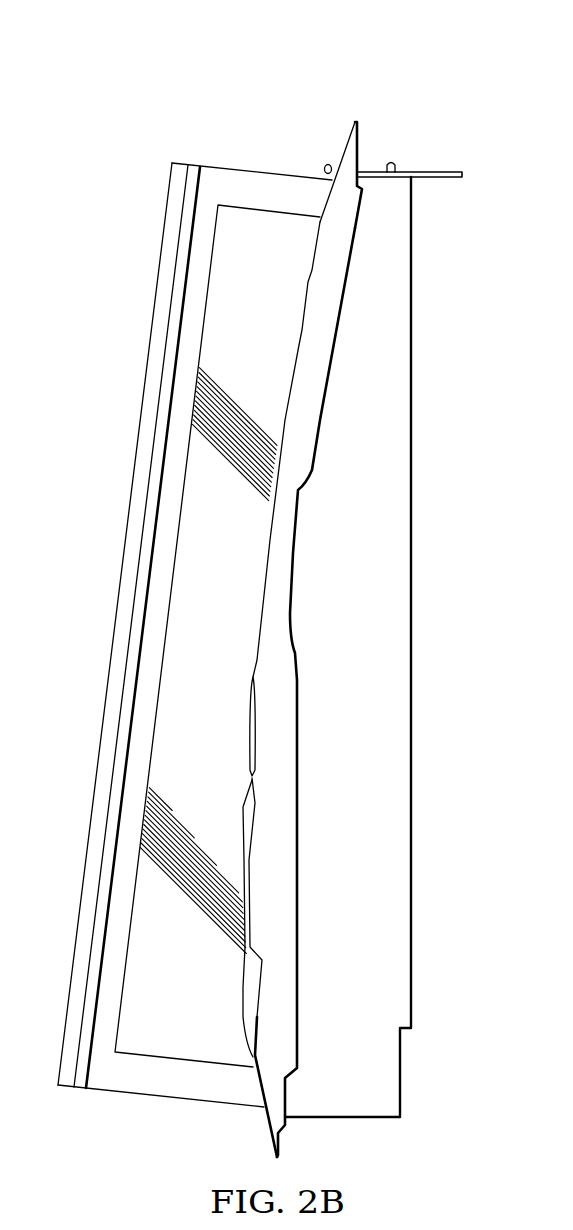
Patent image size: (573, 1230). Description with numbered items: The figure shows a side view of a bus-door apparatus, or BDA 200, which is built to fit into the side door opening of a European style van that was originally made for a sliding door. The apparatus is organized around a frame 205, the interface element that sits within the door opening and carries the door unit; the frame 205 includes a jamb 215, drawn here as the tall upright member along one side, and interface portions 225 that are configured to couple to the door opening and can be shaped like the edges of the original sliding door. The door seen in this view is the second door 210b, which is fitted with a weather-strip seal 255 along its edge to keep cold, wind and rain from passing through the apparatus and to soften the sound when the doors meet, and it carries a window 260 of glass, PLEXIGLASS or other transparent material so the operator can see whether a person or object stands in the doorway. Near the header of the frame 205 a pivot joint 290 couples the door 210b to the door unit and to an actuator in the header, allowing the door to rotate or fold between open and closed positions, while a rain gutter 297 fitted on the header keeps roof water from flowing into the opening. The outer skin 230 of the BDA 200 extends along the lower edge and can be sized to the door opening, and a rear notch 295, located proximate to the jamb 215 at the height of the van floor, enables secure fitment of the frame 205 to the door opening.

The bus-door apparatus 200 is at (185, 62).
The frame 205 is at (344, 124).
The second door 210b is at (252, 170).
The jamb 215 is at (412, 383).
The interface portion 225 is at (297, 864).
The outer skin 230 is at (268, 1128).
The weather-strip seal 255 is at (119, 625).
The window 260 is at (232, 670).
The pivot joint 290 is at (392, 162).
The rear notch 295 is at (421, 1053).
The rain gutter 297 is at (325, 168).